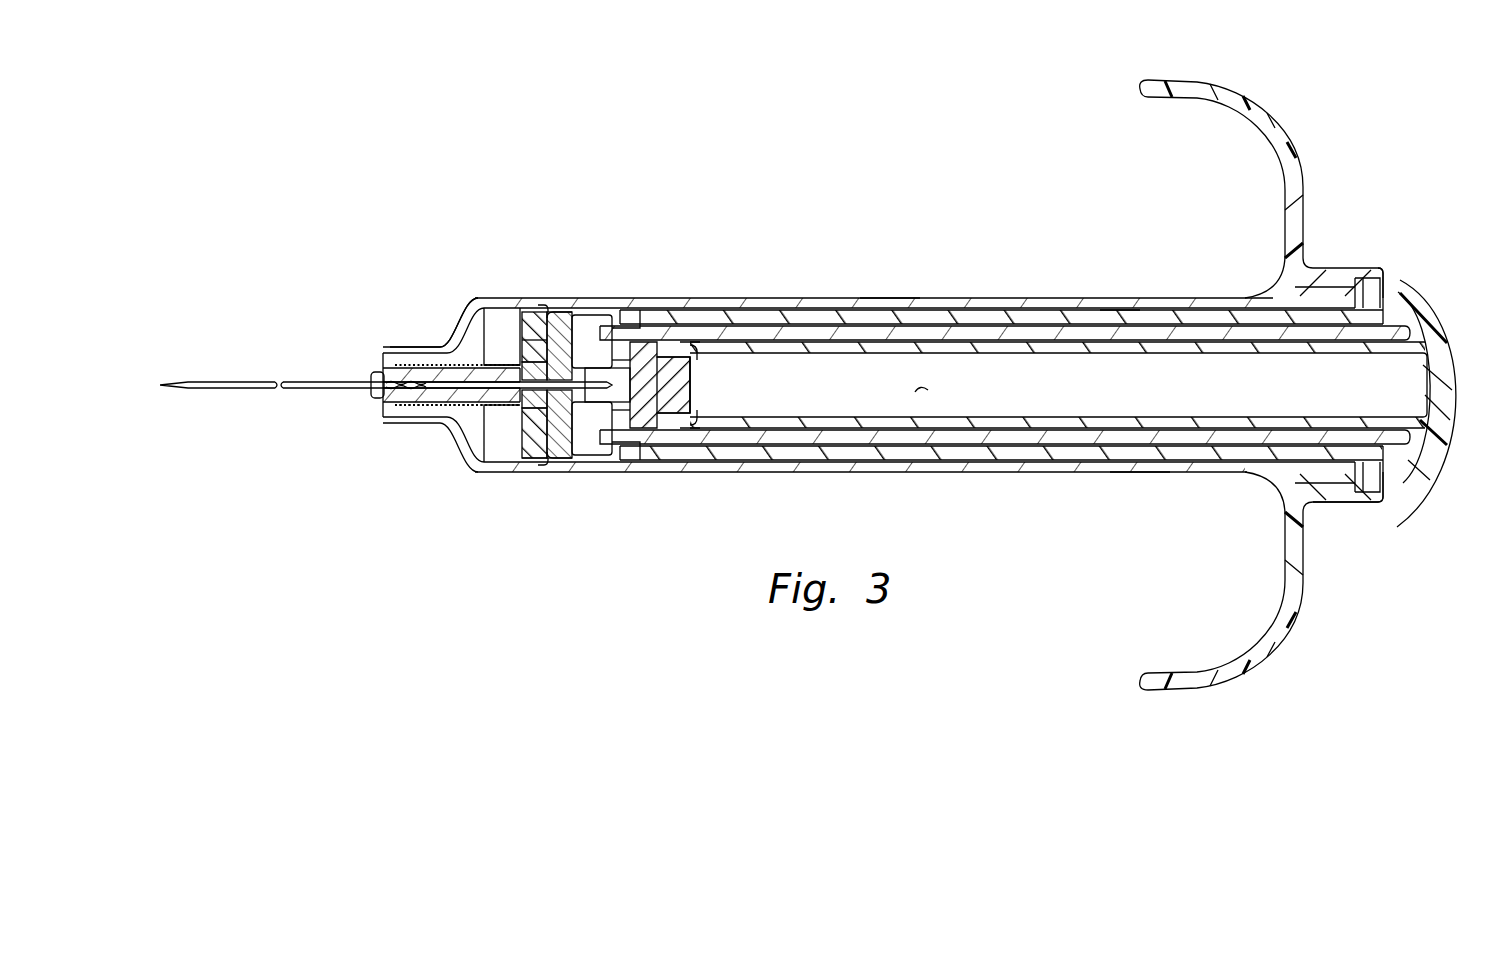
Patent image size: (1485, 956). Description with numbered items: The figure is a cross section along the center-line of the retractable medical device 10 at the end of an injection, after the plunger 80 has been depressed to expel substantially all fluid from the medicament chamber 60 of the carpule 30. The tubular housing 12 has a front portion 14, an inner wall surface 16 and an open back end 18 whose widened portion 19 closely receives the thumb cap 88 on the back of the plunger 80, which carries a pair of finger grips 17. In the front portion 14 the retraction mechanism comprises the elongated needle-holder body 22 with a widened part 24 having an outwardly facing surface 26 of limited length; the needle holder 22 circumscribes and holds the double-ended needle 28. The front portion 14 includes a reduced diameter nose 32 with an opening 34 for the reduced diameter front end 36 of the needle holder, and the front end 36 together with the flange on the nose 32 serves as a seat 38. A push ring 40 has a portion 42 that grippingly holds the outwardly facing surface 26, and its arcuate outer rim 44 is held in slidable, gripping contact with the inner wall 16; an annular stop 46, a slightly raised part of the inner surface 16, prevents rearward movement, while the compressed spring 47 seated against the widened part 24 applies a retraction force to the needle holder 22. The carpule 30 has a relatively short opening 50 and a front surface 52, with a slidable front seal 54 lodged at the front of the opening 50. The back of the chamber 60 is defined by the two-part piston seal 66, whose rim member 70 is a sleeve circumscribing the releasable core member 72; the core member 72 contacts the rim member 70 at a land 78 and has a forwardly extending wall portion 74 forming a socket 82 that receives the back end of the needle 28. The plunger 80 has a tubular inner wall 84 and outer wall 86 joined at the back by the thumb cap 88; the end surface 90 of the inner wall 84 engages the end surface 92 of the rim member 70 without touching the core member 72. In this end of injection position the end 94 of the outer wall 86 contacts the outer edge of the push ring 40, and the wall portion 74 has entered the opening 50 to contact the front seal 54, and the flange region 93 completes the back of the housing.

The retractable medical device 10 is at (513, 97).
The tubular housing 12 is at (1030, 298).
The front portion 14 is at (483, 298).
The inner wall surface 16 is at (995, 458).
The finger grips 17 is at (1240, 117).
The open back end 18 is at (1368, 294).
The widened portion 19 is at (1340, 268).
The needle-holder body 22 is at (468, 330).
The widened part 24 is at (452, 425).
The outwardly facing surface 26 is at (522, 340).
The double-ended needle 28 is at (228, 380).
The carpule 30 is at (925, 335).
The reduced diameter nose 32 is at (396, 347).
The opening 34 is at (372, 378).
The front end 36 is at (380, 396).
The seat 38 is at (386, 353).
The push ring 40 is at (515, 405).
The push ring gripping portion 42 is at (566, 465).
The outer rim 44 is at (528, 310).
The annular stop 46 is at (550, 305).
The compressed spring 47 is at (464, 310).
The opening 50 is at (612, 312).
The front surface 52 is at (522, 456).
The front seal 54 is at (562, 318).
The medicament chamber 60 is at (920, 392).
The piston seal 66 is at (702, 408).
The rim member 70 is at (658, 340).
The core member 72 is at (705, 402).
The forwardly extending wall portion 74 is at (608, 425).
The land 78 is at (682, 412).
The plunger 80 is at (1122, 298).
The socket 82 is at (624, 430).
The inner wall 84 is at (1052, 355).
The outer wall 86 is at (888, 300).
The thumb cap 88 is at (1420, 478).
The end surface 90 is at (690, 372).
The end surface 92 is at (688, 342).
The lower flange 93 is at (1398, 492).
The end 94 is at (545, 304).